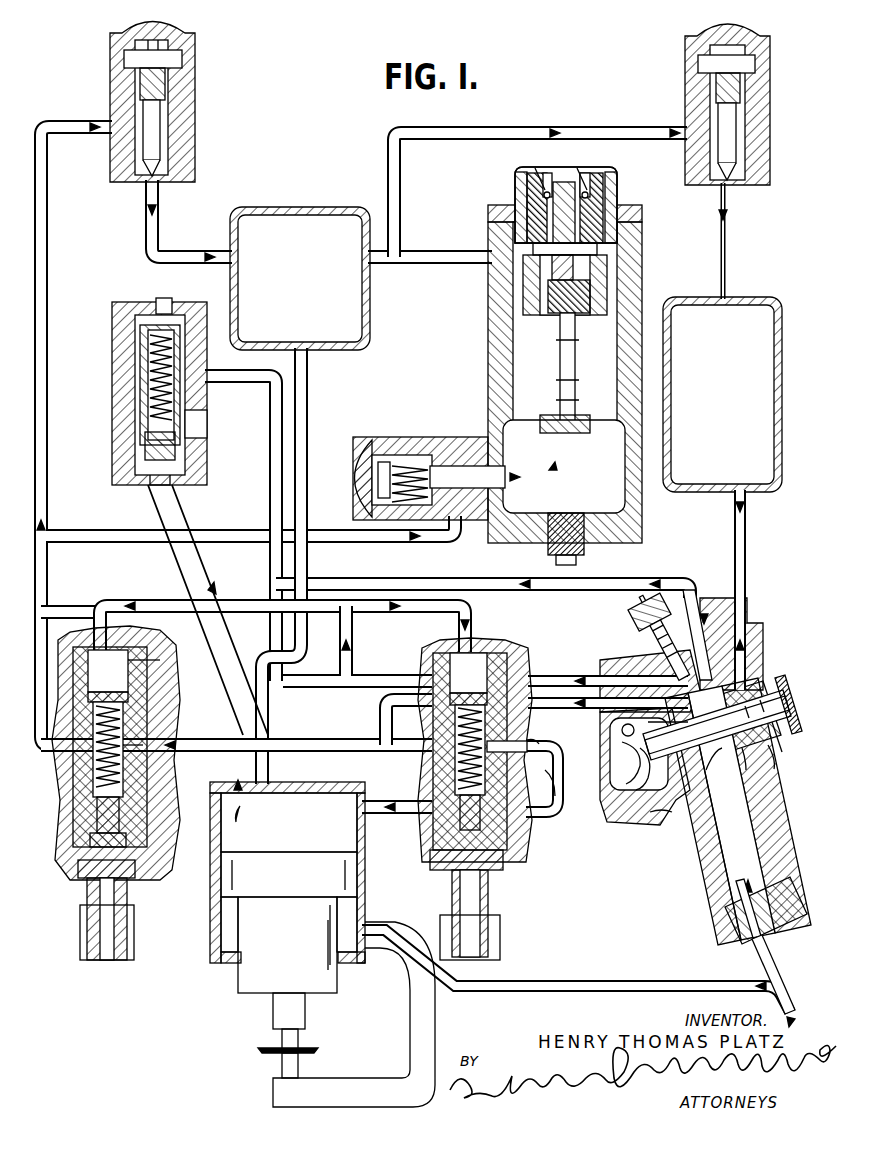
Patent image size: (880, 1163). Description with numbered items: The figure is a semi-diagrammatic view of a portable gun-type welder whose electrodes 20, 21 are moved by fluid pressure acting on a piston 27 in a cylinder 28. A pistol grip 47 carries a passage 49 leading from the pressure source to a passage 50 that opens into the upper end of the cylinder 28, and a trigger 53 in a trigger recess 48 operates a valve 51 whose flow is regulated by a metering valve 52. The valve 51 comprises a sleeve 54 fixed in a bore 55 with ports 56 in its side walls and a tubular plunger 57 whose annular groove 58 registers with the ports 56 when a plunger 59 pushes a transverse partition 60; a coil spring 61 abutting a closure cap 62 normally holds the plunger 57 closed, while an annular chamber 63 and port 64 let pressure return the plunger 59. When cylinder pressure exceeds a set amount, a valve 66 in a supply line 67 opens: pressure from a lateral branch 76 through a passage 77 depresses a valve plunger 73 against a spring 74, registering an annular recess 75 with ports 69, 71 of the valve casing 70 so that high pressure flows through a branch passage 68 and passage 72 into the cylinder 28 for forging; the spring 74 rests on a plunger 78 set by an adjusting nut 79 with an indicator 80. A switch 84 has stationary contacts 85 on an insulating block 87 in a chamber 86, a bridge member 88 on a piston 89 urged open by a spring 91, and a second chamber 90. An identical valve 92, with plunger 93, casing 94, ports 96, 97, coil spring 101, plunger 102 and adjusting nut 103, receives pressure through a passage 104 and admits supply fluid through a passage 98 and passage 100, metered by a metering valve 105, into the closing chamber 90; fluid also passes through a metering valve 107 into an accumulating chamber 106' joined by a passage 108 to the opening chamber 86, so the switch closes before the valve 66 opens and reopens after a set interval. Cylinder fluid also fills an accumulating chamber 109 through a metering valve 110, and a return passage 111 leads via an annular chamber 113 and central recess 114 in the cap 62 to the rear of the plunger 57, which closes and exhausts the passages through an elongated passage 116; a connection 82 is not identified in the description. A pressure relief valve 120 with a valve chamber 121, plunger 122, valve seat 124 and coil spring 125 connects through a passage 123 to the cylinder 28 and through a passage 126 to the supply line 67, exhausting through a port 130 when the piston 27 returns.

The electrode 20 is at (282, 1070).
The electrode 21 is at (282, 1032).
The piston 27 is at (236, 884).
The cylinder 28 is at (222, 814).
The pistol grip 47 is at (700, 886).
The trigger recess 48 is at (642, 812).
The passage 49 is at (748, 814).
The passage 50 is at (304, 720).
The valve 51 is at (769, 762).
The metering valve 52 is at (636, 622).
The trigger 53 is at (628, 754).
The sleeve 54 is at (776, 688).
The bore 55 is at (680, 814).
The ports 56 is at (644, 720).
The tubular plunger 57 is at (644, 766).
The annular groove 58 is at (720, 804).
The plunger 59 is at (624, 736).
The transverse partition 60 is at (752, 650).
The coil spring 61 is at (764, 688).
The closure cap 62 is at (786, 684).
The annular chamber 63 is at (542, 722).
The port 64 is at (750, 760).
The valve 66 is at (482, 781).
The fluid pressure supply line 67 is at (374, 714).
The branch passage 68 is at (356, 732).
The port 69 is at (432, 758).
The valve casing 70 is at (460, 776).
The port 71 is at (522, 743).
The passage 72 is at (557, 804).
The valve plunger 73 is at (462, 826).
The spring 74 is at (482, 682).
The annular recess 75 is at (557, 794).
The lateral branch 76 is at (338, 640).
The passage 77 is at (398, 604).
The plunger 78 is at (496, 856).
The adjusting nut 79 is at (494, 954).
The indicator 80 is at (496, 925).
The return line 82 is at (578, 990).
The switch 84 is at (599, 196).
The stationary electrical contacts 85 is at (611, 218).
The fluid pressure chamber 86 is at (619, 281).
The insulating block 87 is at (618, 226).
The movable bridge member 88 is at (530, 298).
The piston 89 is at (537, 330).
The second fluid pressure chamber 90 is at (555, 382).
The spring 91 is at (544, 441).
The valve 92 is at (124, 768).
The plunger 93 is at (146, 702).
The valve casing 94 is at (158, 668).
The port 96 is at (82, 768).
The port 97 is at (143, 742).
The passage 98 is at (74, 627).
The passage 100 is at (53, 266).
The coil spring 101 is at (108, 671).
The plunger 102 is at (96, 836).
The adjusting nut 103 is at (90, 949).
The passage 104 is at (288, 622).
The metering valve 105 is at (388, 436).
The accumulating chamber 106' is at (300, 260).
The metering valve 107 is at (186, 80).
The passage 108 is at (484, 258).
The accumulating chamber 109 is at (800, 280).
The metering valve 110 is at (708, 86).
The fluid pressure return passage 111 is at (748, 556).
The annular chamber 113 is at (782, 746).
The central recess 114 is at (748, 690).
The elongated passage 116 is at (710, 625).
The pressure relief valve 120 is at (153, 385).
The valve chamber 121 is at (140, 368).
The plunger 122 is at (146, 410).
The passage 123 is at (157, 490).
The valve seat 124 is at (182, 460).
The coil spring 125 is at (172, 304).
The passage 126 is at (644, 576).
The port 130 is at (215, 412).